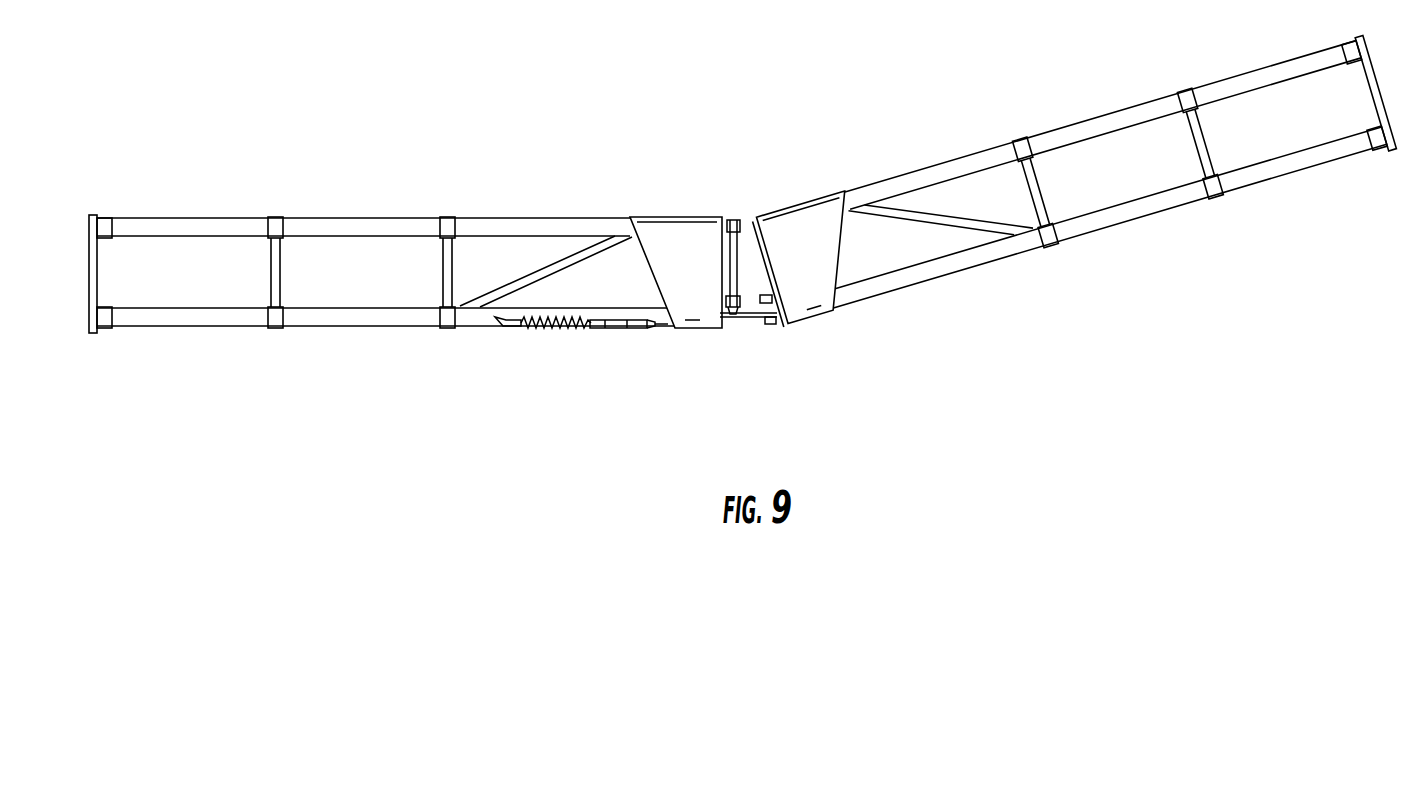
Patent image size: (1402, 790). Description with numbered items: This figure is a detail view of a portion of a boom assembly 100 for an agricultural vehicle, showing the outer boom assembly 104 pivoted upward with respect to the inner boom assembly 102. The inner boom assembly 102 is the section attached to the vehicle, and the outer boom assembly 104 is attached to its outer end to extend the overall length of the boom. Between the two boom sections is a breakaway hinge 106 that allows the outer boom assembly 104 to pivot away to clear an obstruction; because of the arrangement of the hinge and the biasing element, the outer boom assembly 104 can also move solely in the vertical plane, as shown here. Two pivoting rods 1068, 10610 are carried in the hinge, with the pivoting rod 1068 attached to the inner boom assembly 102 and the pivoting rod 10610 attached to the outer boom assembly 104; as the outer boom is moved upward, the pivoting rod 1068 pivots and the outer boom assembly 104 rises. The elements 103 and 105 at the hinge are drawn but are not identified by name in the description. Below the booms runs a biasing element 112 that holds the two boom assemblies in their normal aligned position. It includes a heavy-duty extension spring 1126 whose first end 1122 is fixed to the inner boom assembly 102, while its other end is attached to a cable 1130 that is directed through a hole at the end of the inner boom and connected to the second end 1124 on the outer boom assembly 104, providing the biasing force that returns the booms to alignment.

The boom assembly 100 is at (902, 134).
The inner boom assembly 102 is at (505, 218).
The outer boom assembly 104 is at (1115, 123).
The first hinge plate 103 is at (732, 268).
The second hinge plate 105 is at (758, 260).
The breakaway hinge 106 is at (744, 277).
The biasing element 112 is at (555, 390).
The first end 1122 is at (499, 327).
The extension spring 1126 is at (579, 330).
The cable 1130 is at (665, 330).
The second end 1124 is at (770, 324).
The pivoting rod 10610 is at (732, 314).
The pivoting rod 1068 is at (766, 317).